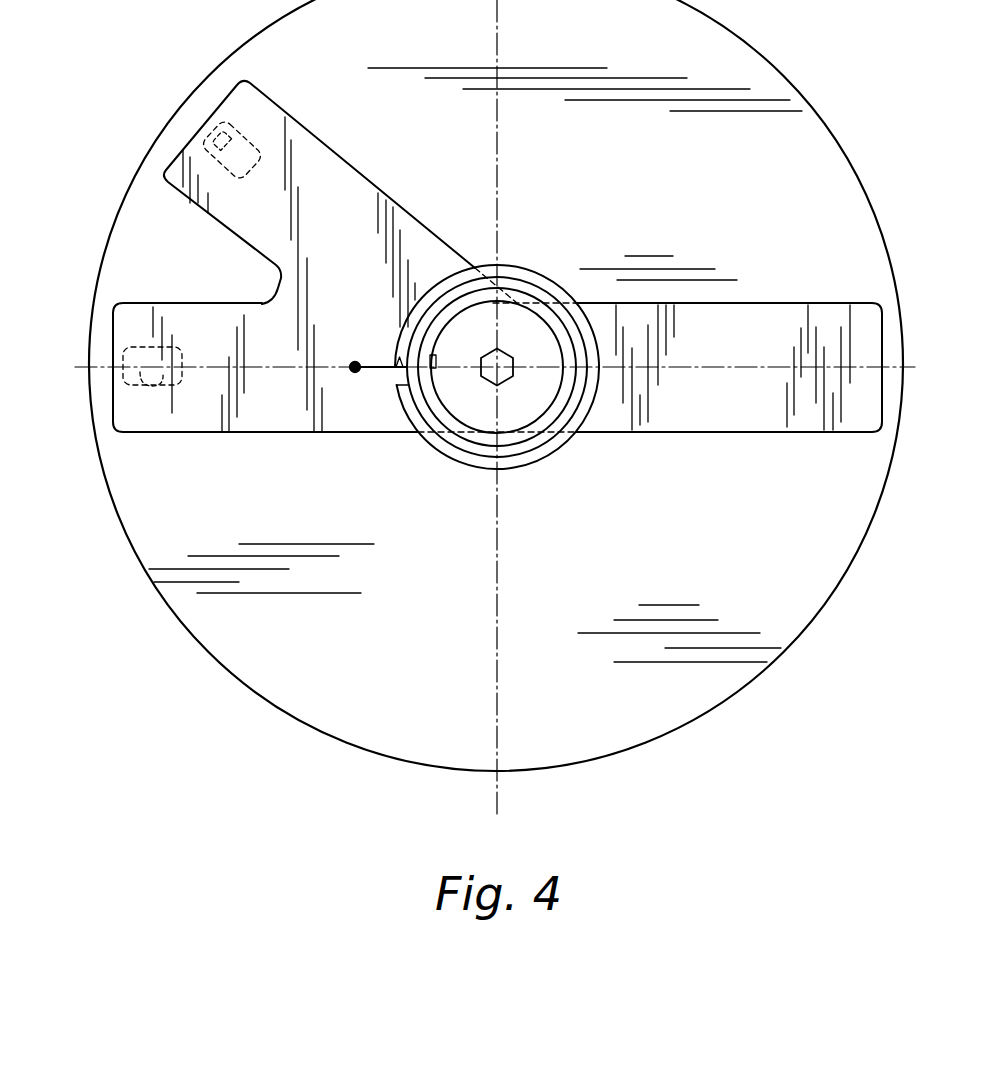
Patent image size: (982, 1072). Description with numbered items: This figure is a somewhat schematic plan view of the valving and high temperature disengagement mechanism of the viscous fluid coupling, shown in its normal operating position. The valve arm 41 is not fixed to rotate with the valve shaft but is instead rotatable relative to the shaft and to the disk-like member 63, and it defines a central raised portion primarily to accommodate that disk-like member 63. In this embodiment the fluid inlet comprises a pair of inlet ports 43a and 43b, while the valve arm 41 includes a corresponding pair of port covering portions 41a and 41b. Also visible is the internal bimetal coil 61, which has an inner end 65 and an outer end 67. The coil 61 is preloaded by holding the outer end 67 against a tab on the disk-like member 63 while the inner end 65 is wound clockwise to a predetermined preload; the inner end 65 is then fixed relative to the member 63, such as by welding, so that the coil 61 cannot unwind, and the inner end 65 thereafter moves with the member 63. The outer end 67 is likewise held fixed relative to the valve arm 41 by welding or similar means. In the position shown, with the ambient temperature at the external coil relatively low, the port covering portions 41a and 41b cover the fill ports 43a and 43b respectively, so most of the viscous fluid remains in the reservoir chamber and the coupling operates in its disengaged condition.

The valve arm 41 is at (457, 226).
The port covering portion 41a is at (212, 110).
The port covering portion 41b is at (110, 345).
The inlet port 43a is at (207, 136).
The inlet port 43b is at (160, 388).
The internal bimetal coil 61 is at (473, 444).
The disk-like member 63 is at (552, 276).
The inner end 65 is at (434, 363).
The outer end 67 is at (372, 371).